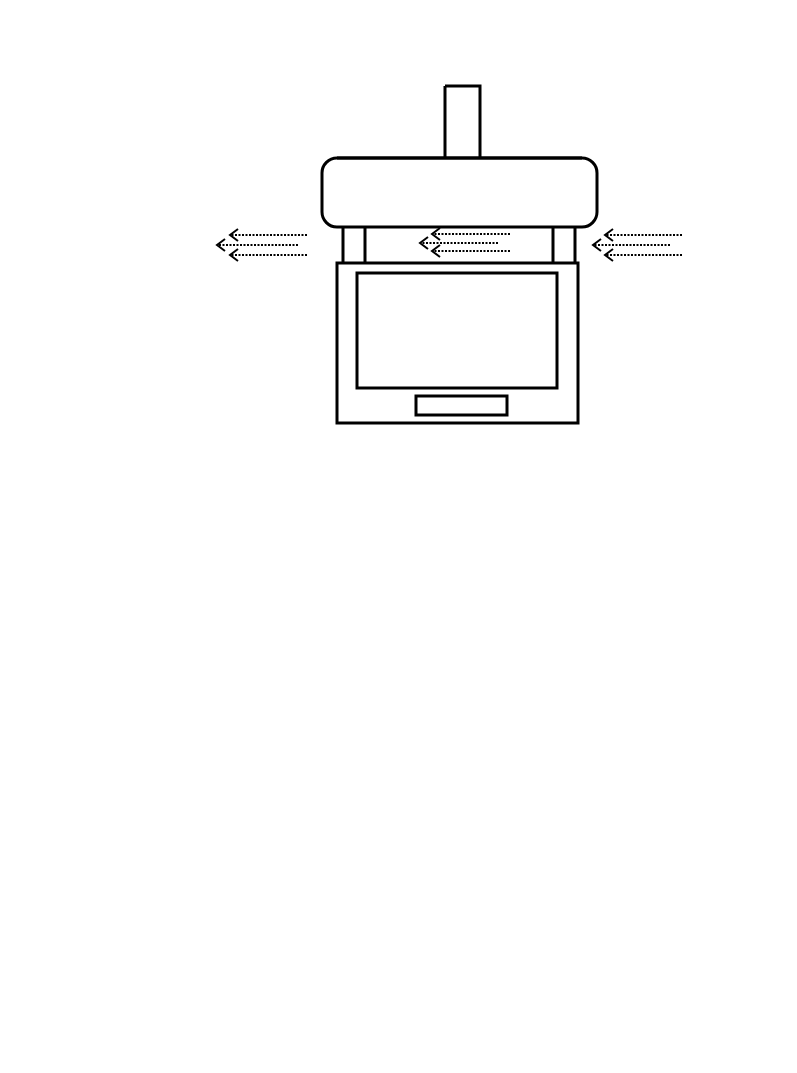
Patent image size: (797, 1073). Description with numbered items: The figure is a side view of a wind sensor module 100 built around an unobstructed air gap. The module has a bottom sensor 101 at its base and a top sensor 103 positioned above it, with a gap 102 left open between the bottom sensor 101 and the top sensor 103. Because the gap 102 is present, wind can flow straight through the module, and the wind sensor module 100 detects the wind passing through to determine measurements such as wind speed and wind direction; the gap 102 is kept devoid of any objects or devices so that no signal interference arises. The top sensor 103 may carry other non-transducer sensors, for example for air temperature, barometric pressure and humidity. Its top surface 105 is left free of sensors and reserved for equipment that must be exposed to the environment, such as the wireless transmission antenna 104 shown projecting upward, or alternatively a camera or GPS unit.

The wind sensor module 100 is at (177, 70).
The bottom sensor 101 is at (533, 262).
The gap 102 is at (380, 250).
The top sensor 103 is at (582, 187).
The wireless transmission antenna 104 is at (435, 127).
The top surface 105 is at (380, 158).